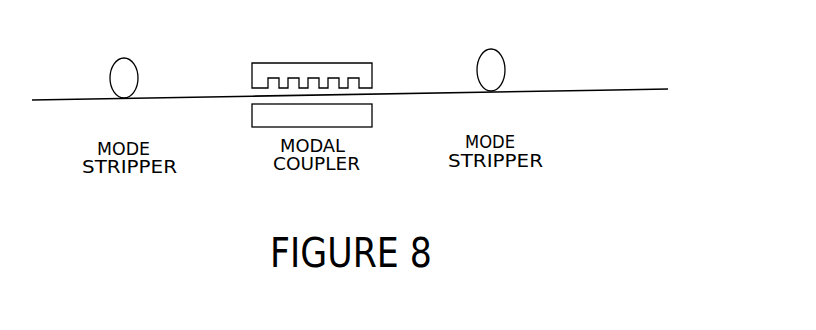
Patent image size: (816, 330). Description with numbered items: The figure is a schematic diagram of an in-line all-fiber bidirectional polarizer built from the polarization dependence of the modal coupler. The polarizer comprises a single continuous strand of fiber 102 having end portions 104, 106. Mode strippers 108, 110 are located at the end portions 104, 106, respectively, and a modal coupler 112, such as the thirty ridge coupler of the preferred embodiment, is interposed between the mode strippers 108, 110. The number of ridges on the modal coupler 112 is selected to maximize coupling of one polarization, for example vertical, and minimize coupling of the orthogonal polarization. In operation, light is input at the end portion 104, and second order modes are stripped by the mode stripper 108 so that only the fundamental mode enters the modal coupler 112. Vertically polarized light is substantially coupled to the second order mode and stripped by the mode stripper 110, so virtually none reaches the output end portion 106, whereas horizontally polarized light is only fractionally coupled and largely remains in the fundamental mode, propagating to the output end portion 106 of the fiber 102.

The fiber 102 is at (585, 88).
The end portion 104 is at (70, 102).
The end portion 106 is at (613, 90).
The mode stripper 108 is at (126, 58).
The mode stripper 110 is at (492, 48).
The modal coupler 112 is at (322, 62).